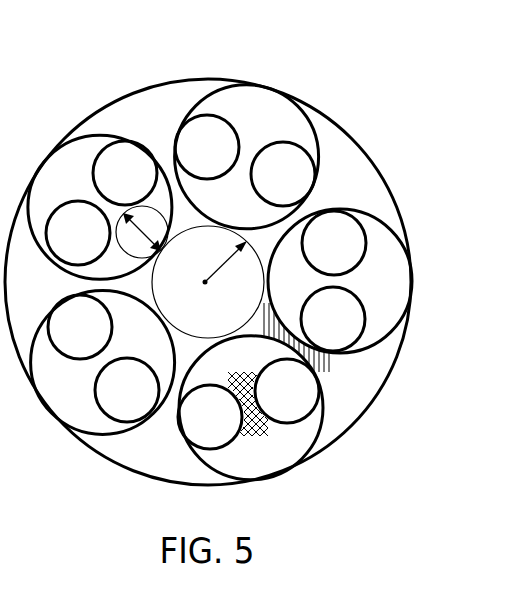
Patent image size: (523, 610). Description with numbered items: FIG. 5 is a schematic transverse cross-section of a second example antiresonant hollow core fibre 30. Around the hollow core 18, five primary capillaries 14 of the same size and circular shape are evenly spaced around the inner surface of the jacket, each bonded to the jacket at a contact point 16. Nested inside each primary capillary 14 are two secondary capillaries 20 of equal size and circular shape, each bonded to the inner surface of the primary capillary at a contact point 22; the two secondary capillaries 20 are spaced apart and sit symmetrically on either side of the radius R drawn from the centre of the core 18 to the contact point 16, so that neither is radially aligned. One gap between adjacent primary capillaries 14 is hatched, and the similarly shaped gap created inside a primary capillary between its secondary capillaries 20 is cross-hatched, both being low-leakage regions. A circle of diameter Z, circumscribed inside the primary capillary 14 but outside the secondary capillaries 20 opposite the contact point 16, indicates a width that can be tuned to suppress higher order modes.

The fibre 30 is at (381, 79).
The contact point 16 is at (270, 90).
The primary capillary 14 is at (372, 218).
The contact point 22 is at (177, 131).
The secondary capillary 20 is at (368, 248).
The core 18 is at (196, 278).
The radius R is at (225, 268).
The width z Z is at (142, 232).